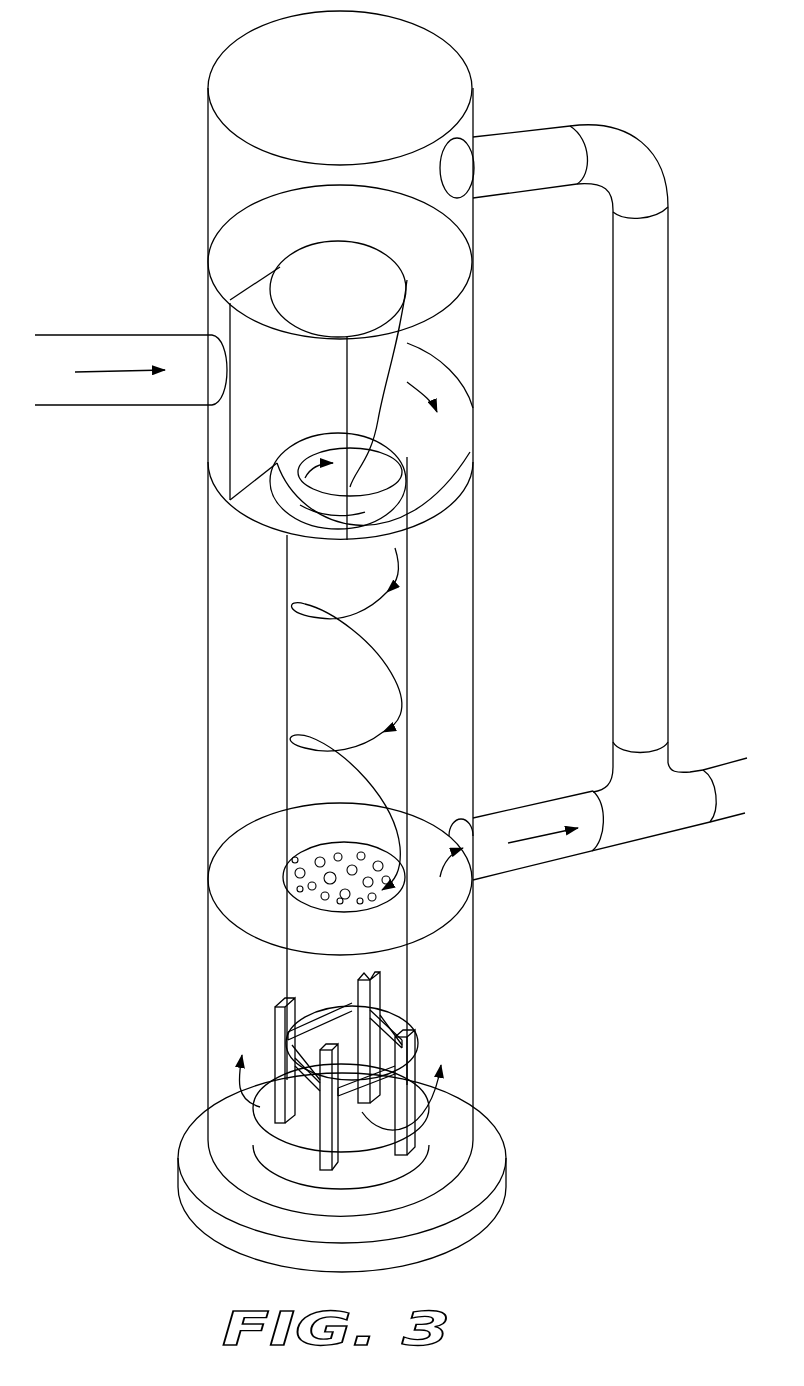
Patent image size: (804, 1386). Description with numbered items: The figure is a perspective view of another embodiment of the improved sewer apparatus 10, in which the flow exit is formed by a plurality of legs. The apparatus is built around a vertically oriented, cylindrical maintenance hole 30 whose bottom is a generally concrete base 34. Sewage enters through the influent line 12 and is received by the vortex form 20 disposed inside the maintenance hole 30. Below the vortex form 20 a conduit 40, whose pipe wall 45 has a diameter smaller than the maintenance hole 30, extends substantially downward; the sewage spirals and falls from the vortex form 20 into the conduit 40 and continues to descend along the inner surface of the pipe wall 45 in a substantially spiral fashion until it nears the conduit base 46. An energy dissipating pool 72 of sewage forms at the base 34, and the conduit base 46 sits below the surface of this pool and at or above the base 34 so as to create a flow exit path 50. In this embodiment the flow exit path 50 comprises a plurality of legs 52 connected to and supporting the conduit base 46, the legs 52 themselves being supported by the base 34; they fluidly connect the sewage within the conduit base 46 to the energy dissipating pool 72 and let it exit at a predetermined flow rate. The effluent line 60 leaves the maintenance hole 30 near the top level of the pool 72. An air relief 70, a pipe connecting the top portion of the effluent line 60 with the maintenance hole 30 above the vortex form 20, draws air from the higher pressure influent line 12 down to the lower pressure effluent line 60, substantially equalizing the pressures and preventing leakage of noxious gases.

The improved sewer apparatus 10 is at (196, 64).
The influent line 12 is at (121, 401).
The vortex form 20 is at (244, 196).
The maintenance hole 30 is at (205, 698).
The base 34 is at (448, 1147).
The conduit 40 is at (285, 588).
The pipe wall 45 is at (407, 670).
The conduit base 46 is at (278, 1049).
The flow exit path 50 is at (272, 1062).
The plurality of legs 52 is at (300, 1110).
The effluent line 60 is at (574, 857).
The air relief 70 is at (572, 117).
The energy dissipating pool 72 is at (443, 955).